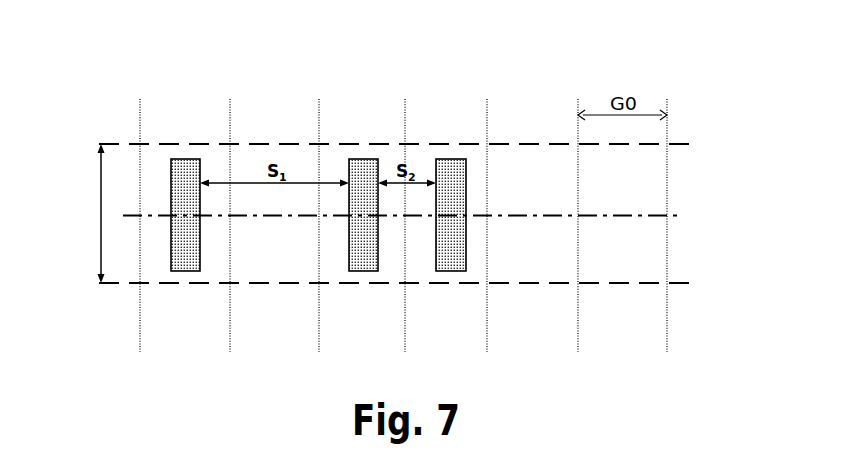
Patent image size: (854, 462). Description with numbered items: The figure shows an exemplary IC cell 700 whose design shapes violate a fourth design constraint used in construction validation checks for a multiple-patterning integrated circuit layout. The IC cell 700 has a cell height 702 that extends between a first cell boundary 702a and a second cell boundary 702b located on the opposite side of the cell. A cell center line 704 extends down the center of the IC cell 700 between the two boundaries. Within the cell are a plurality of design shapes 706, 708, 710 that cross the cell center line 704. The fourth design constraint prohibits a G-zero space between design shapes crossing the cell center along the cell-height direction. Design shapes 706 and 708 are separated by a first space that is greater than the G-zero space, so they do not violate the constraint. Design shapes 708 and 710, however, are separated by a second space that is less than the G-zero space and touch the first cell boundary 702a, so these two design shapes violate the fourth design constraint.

The IC cell 700 is at (85, 39).
The cell height 702 is at (79, 213).
The first cell boundary 702a is at (698, 144).
The second cell boundary 702b is at (698, 283).
The cell center line 704 is at (680, 215).
The design shape 706 is at (185, 271).
The design shape 708 is at (364, 271).
The design shape 710 is at (451, 271).